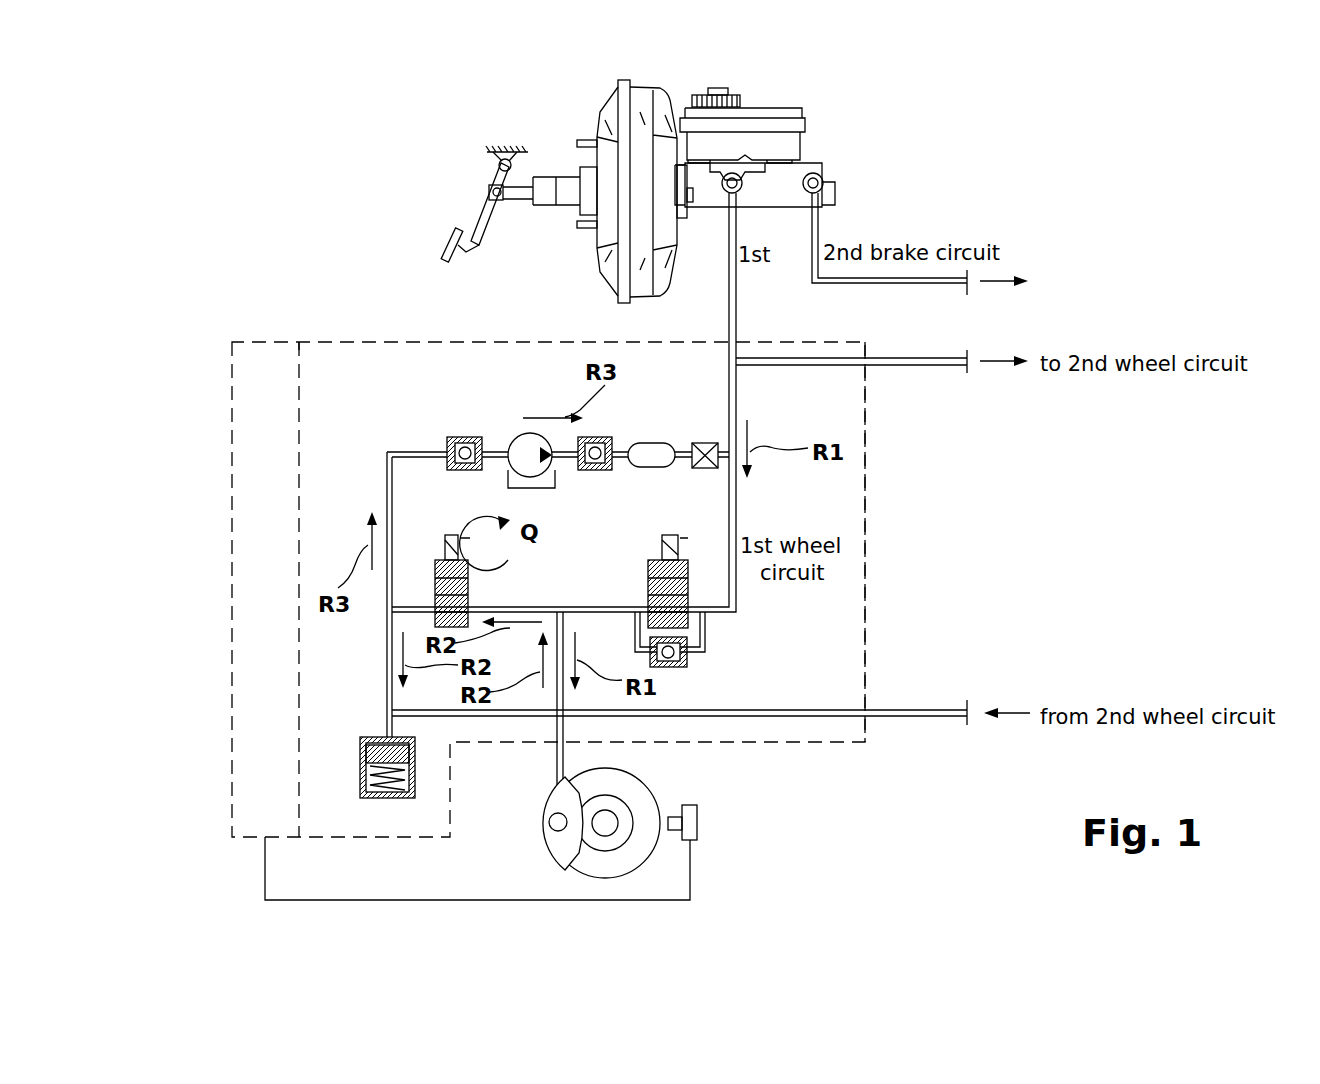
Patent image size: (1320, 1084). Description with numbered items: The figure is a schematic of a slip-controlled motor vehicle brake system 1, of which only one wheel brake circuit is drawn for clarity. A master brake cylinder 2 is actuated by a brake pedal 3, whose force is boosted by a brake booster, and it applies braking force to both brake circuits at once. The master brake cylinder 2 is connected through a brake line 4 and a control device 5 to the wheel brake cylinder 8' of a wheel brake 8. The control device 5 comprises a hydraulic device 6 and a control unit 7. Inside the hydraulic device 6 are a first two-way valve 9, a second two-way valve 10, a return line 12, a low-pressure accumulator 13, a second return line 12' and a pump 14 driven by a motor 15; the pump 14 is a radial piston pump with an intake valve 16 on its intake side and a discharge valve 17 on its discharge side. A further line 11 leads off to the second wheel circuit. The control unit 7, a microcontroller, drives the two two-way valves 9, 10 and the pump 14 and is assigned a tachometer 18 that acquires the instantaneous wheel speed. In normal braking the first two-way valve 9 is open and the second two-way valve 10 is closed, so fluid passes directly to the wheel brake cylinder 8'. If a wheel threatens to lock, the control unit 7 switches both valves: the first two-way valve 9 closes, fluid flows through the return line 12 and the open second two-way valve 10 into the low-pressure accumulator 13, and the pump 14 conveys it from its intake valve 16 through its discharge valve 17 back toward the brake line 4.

The motor vehicle brake system 1 is at (372, 250).
The master brake cylinder 2 is at (787, 178).
The brake pedal 3 is at (483, 228).
The brake line 4 is at (729, 300).
The control device 5 is at (890, 552).
The hydraulic device 6 is at (866, 515).
The control unit 7 is at (258, 662).
The wheel brake 8 is at (566, 823).
The wheel brake cylinder 8' is at (519, 824).
The first two-way valve 9 is at (648, 590).
The second two-way valve 10 is at (434, 600).
The line to second wheel circuit 11 is at (898, 366).
The return line 12 is at (711, 671).
The second return line 12' is at (534, 571).
The low-pressure accumulator 13 is at (377, 737).
The pump 14 is at (518, 440).
The motor 15 is at (515, 482).
The intake valve 16 is at (462, 437).
The discharge valve 17 is at (605, 470).
The tachometer 18 is at (700, 822).